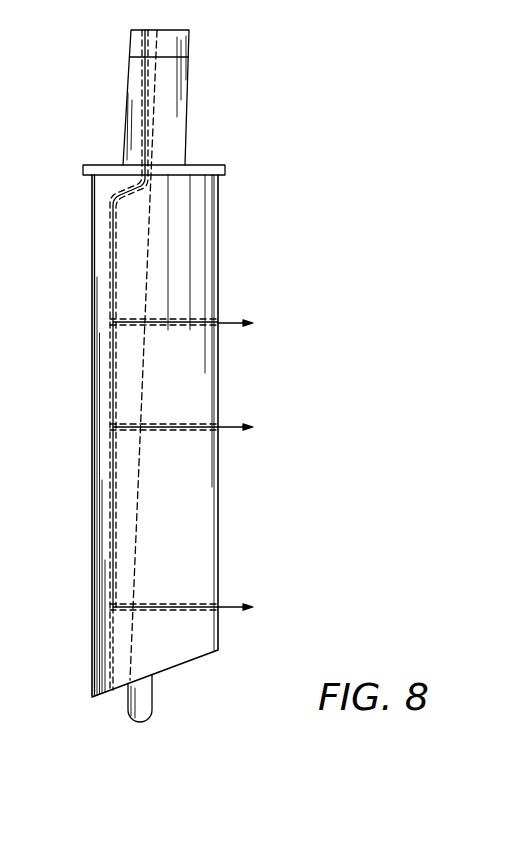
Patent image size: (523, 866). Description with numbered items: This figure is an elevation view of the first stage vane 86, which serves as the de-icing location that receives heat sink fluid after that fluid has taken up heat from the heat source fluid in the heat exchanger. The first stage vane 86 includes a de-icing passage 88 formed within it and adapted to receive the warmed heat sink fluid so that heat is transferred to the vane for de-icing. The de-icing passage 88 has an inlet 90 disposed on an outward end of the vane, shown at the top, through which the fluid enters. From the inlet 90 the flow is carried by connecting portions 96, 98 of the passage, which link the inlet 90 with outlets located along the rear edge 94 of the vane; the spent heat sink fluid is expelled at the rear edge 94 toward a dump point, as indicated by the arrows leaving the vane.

The first stage vane 86 is at (275, 110).
The de-icing passage 88 is at (110, 215).
The inlet 90 is at (143, 30).
The rear edge 94 is at (220, 321).
The portion of the de-icing passage 96 is at (106, 392).
The portion of the de-icing passage 98 is at (175, 320).